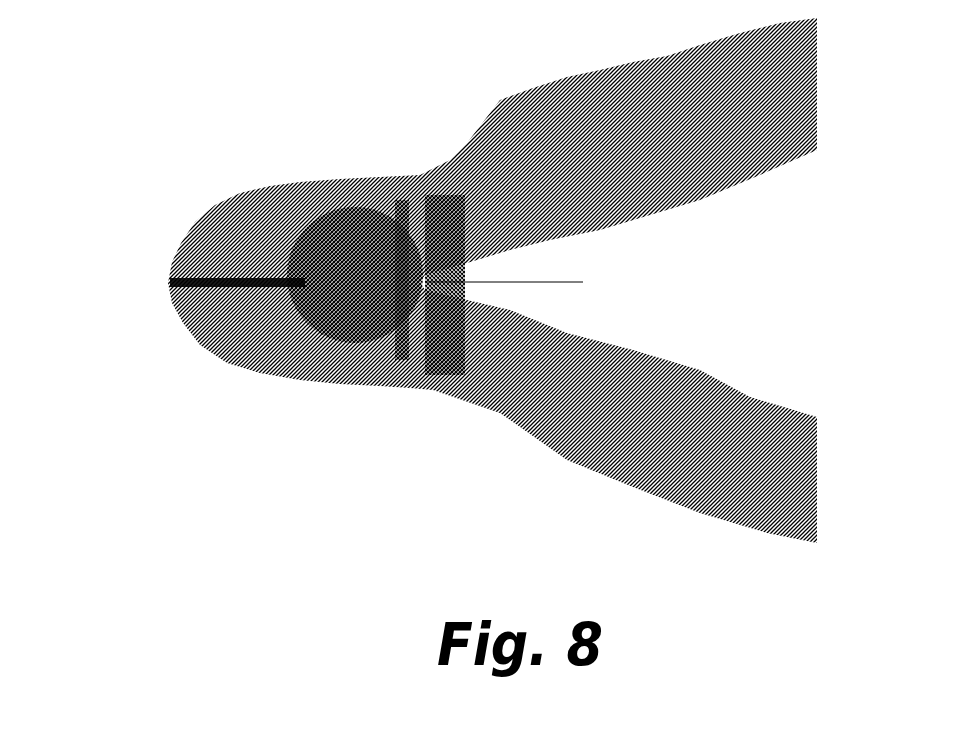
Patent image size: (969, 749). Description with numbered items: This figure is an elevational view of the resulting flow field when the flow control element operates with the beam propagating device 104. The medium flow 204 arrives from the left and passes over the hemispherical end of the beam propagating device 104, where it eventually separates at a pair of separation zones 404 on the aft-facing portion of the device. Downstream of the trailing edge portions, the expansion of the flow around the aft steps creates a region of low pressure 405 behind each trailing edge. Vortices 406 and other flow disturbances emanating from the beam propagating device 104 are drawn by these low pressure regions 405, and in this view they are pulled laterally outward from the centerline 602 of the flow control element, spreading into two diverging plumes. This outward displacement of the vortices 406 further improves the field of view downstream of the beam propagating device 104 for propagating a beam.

The beam propagating device 104 is at (320, 248).
The medium flow 204 is at (141, 282).
The separation zones 404 is at (400, 228).
The low pressure regions 405 is at (435, 213).
The vortices 406 is at (565, 167).
The centerline 602 is at (548, 282).